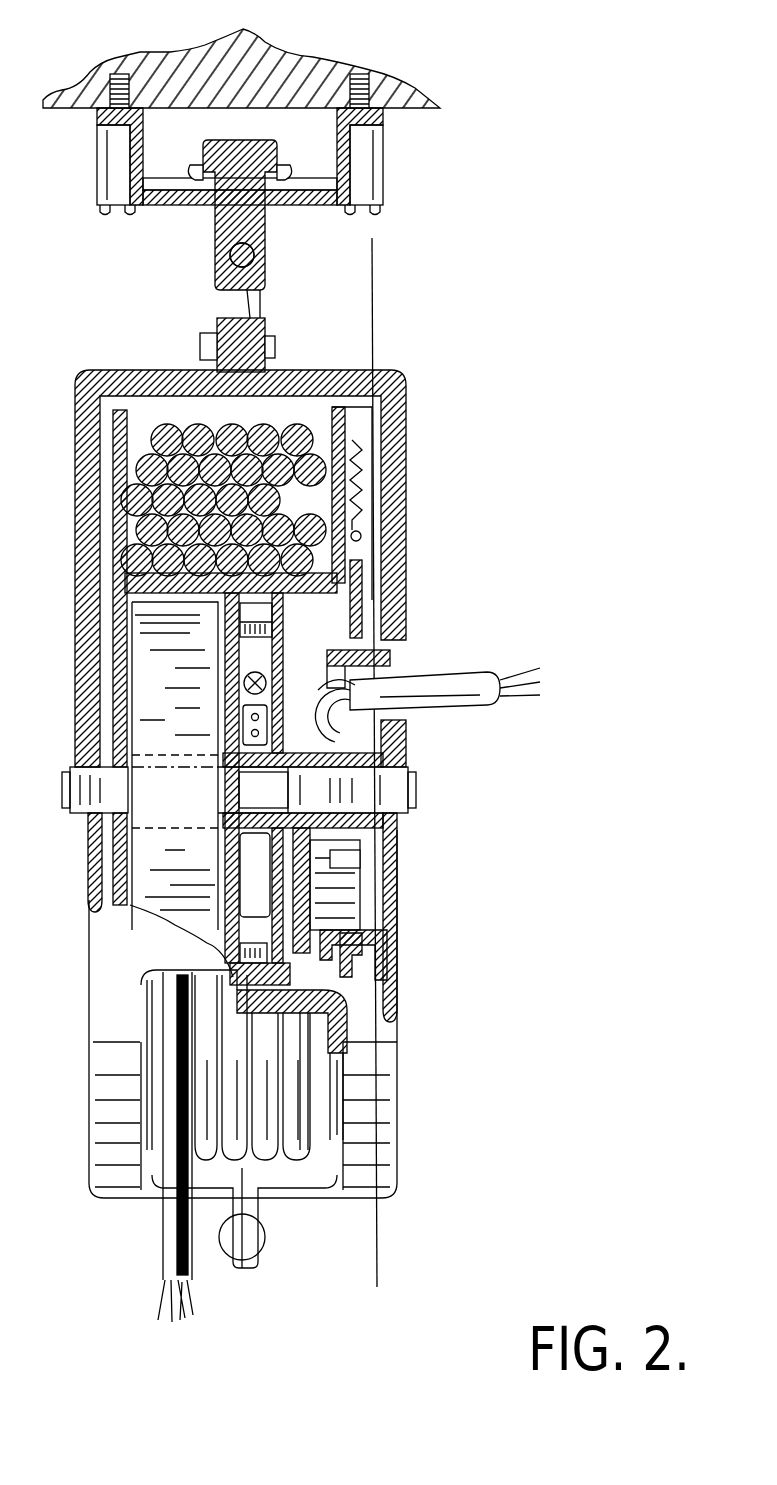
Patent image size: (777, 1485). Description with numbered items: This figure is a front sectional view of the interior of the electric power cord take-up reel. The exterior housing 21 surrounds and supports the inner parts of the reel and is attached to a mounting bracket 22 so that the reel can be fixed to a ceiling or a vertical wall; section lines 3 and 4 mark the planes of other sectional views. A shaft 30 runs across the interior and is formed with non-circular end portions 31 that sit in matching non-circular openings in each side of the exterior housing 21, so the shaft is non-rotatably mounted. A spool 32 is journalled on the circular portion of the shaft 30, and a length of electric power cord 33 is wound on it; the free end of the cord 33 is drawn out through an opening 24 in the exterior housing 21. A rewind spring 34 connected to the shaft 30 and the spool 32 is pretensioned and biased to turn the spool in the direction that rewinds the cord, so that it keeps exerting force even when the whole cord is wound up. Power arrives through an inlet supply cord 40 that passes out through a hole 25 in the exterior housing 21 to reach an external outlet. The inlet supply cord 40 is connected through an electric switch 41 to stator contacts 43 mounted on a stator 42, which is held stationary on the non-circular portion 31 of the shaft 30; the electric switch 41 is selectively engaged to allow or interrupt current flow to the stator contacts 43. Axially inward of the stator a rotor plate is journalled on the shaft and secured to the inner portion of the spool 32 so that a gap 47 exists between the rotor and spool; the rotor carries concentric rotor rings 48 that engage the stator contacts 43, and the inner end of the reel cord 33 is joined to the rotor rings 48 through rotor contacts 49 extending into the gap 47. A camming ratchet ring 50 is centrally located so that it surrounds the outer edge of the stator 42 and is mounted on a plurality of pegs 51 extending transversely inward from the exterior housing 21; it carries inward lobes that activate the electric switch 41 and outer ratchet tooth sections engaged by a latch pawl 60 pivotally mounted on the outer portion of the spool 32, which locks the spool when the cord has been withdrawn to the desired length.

The section line 3- 3 is at (323, 252).
The section line 4- 4 is at (263, 527).
The exterior housing 21 is at (88, 1065).
The mounting bracket 22 is at (172, 370).
The opening 24 is at (273, 1170).
The hole 25 is at (417, 718).
The shaft 30 is at (247, 783).
The non-circular end portions 31 is at (83, 837).
The spool 32 is at (210, 603).
The electric power cord 33 is at (160, 1225).
The rewind spring 34 is at (173, 903).
The inlet supply cord 40 is at (432, 668).
The electric switch 41 is at (312, 905).
The stator 42 is at (313, 873).
The stator contacts 43 is at (350, 942).
The gap 47 is at (250, 862).
The rotor rings 48 is at (270, 740).
The rotor contacts 49 is at (247, 722).
The camming ratchet ring 50 is at (352, 648).
The pegs 51 is at (378, 960).
The latch pawl 60 is at (390, 574).